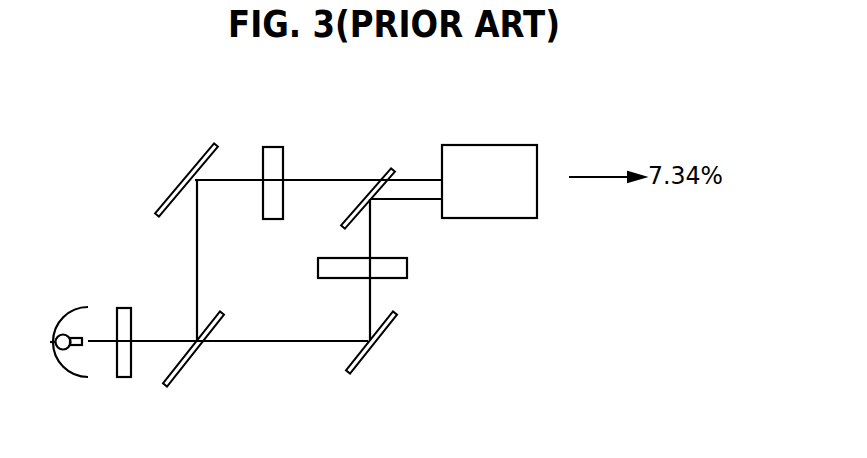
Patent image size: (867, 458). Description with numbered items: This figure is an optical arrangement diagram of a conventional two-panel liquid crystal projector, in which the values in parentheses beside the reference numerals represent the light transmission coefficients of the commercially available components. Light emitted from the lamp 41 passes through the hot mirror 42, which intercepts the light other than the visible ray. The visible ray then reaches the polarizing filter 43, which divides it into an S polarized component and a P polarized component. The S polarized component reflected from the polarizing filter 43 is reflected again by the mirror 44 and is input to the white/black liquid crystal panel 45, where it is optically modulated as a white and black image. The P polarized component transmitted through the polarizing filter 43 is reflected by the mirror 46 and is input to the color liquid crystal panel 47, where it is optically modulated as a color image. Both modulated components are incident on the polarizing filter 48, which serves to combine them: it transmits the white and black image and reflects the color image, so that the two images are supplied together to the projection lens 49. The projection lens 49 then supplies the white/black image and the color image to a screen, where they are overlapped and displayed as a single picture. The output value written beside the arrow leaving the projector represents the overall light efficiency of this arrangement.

The lamp 41 is at (73, 378).
The hot mirror 42 is at (123, 378).
The polarizing filter 43 is at (183, 370).
The mirror 44 is at (204, 155).
The white/black liquid crystal panel 45 is at (273, 145).
The mirror 46 is at (360, 370).
The color liquid crystal panel 47 is at (407, 267).
The polarizing filter 48 is at (388, 168).
The projection lens 49 is at (478, 145).